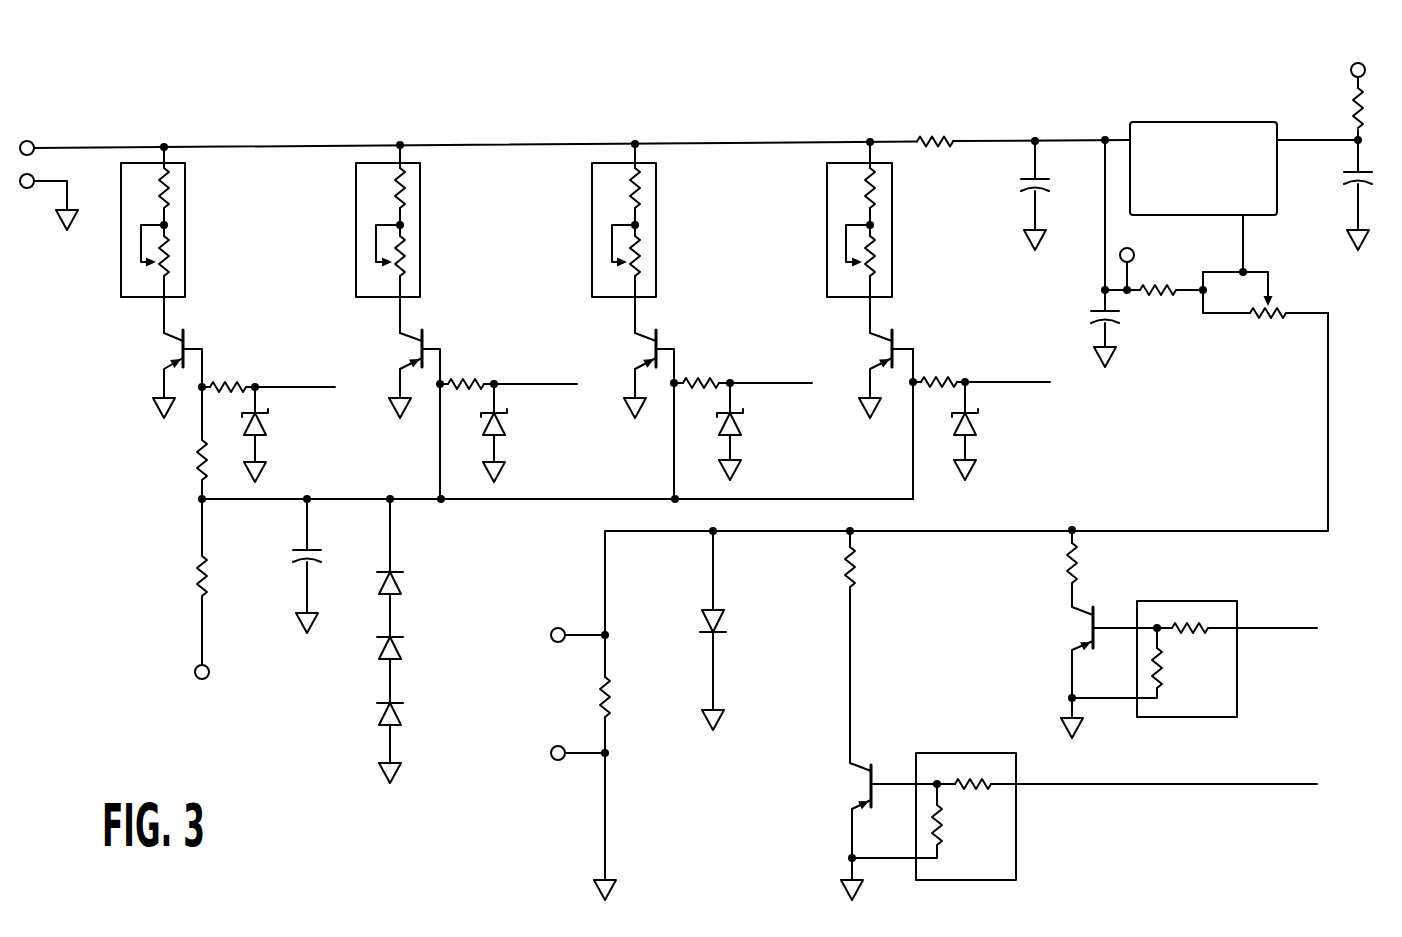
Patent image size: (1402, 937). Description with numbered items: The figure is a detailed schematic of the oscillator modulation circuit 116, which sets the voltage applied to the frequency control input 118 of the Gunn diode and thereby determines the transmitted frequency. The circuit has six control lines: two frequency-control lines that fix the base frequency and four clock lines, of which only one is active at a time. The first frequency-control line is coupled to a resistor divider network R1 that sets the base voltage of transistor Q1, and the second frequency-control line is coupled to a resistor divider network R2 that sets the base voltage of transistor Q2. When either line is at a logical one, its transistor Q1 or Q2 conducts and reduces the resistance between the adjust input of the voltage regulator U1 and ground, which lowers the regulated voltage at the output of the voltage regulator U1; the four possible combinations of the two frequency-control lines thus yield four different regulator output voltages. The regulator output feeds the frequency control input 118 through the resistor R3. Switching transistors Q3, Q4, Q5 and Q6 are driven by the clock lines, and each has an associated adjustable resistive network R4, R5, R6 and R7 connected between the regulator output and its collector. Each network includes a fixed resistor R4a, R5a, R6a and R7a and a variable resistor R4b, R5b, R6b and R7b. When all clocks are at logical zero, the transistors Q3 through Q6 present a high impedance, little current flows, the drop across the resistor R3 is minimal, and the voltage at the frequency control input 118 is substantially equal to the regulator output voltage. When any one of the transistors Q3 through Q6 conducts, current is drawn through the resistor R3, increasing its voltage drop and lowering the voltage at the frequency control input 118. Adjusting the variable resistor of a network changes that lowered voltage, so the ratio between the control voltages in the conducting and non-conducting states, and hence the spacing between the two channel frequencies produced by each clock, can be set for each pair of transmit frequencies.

The oscillator modulation circuit 116 is at (533, 96).
The frequency control input 118 is at (34, 144).
The resistor R3 is at (936, 140).
The adjustable resistive network R4 is at (121, 272).
The fixed resistor R4a is at (170, 181).
The variable resistor R4b is at (170, 243).
The adjustable resistive network R5 is at (356, 272).
The fixed resistor R5a is at (406, 181).
The variable resistor R5b is at (406, 243).
The adjustable resistive network R6 is at (592, 267).
The fixed resistor R6a is at (641, 181).
The variable resistor R6b is at (641, 243).
The adjustable resistive network R7 is at (827, 270).
The fixed resistor R7a is at (876, 181).
The variable resistor R7b is at (876, 243).
The transistor Q1 is at (1098, 634).
The transistor Q2 is at (878, 715).
The switching transistor Q3 is at (166, 374).
The switching transistor Q4 is at (405, 374).
The switching transistor Q5 is at (639, 374).
The switching transistor Q6 is at (876, 374).
The resistor divider network R1 is at (1178, 601).
The resistor divider network R2 is at (953, 753).
The voltage regulator U1 is at (1143, 122).